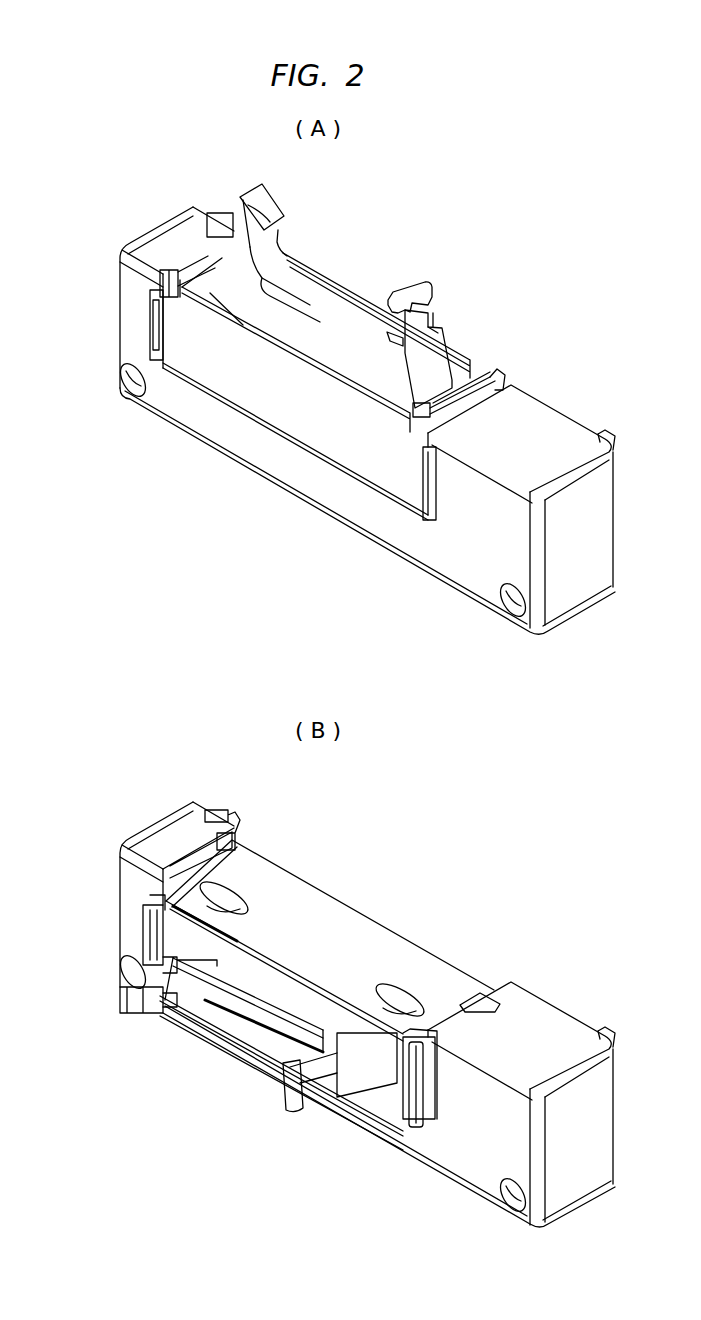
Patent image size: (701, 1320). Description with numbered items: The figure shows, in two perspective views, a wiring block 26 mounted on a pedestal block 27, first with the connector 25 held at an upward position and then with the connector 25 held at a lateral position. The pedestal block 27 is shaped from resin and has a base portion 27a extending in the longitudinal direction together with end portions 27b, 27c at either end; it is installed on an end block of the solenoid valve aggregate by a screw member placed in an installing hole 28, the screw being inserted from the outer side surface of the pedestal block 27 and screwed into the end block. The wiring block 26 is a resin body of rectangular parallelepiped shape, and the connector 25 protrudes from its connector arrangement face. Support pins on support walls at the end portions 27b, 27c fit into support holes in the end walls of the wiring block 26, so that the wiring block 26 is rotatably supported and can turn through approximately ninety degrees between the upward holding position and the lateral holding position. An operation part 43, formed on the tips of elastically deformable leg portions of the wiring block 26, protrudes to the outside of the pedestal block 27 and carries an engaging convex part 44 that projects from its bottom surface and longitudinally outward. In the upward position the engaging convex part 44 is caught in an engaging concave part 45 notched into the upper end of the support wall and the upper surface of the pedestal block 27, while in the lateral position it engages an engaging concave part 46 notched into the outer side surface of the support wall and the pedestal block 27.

The connector 25 is at (440, 342).
The wiring block 26 is at (333, 438).
The pedestal block 27 is at (192, 415).
The base portion 27a is at (250, 447).
The end portion 27b is at (135, 289).
The end portion 27c is at (470, 512).
The installing hole 28 is at (128, 382).
The operation part 43 is at (203, 227).
The engaging convex part 44 is at (445, 1052).
The engaging concave part 45 is at (215, 845).
The engaging concave part 46 is at (152, 338).